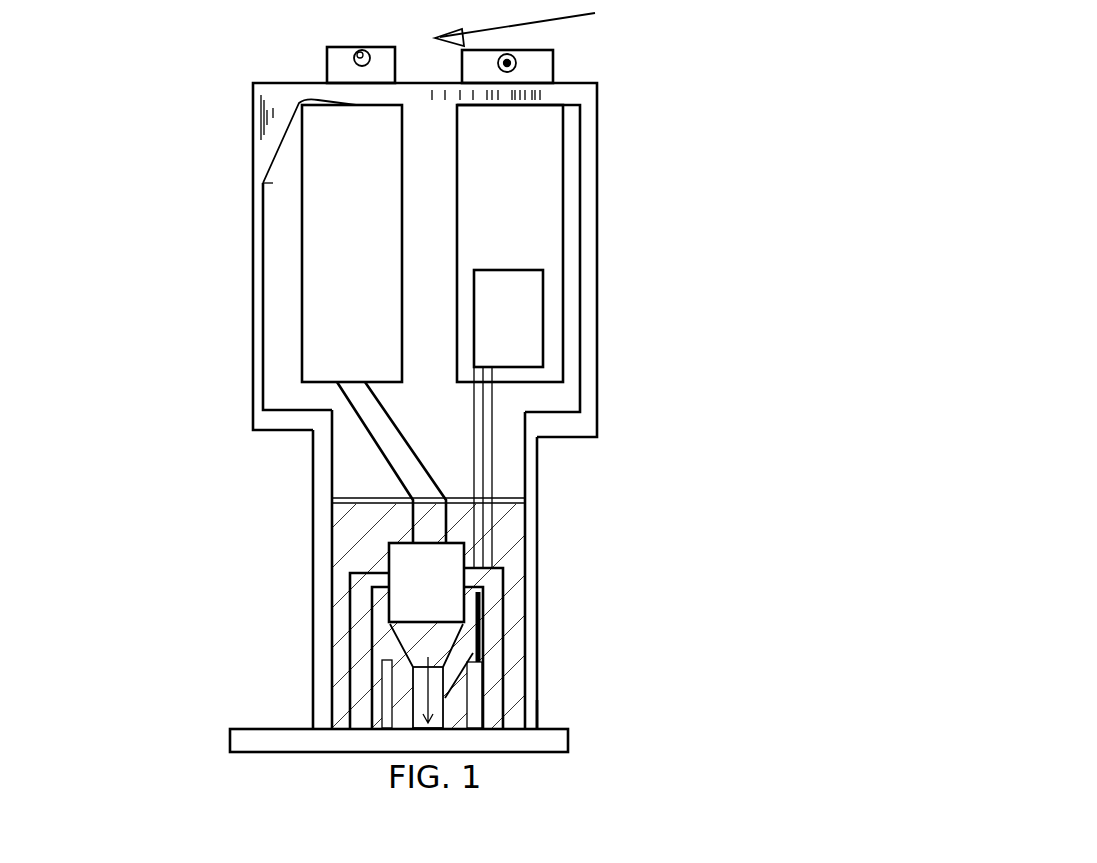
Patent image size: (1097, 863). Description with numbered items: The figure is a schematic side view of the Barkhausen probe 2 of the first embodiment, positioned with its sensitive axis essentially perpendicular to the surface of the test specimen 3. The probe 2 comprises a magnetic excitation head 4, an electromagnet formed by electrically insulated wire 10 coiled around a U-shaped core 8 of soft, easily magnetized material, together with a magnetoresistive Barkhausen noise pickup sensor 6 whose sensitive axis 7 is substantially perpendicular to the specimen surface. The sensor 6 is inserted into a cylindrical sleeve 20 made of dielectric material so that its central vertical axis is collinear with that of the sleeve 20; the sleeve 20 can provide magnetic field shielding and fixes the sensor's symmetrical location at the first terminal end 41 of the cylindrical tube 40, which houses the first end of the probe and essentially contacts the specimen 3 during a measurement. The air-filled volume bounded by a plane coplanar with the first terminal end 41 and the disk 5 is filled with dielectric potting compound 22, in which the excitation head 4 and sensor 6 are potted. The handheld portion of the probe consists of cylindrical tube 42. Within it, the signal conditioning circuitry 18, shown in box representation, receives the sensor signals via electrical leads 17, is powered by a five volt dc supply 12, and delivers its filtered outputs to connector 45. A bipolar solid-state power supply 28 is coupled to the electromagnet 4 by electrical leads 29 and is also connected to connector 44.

The Barkhausen probe 2 is at (532, 23).
The test specimen 3 is at (300, 728).
The magnetic excitation head 4 is at (395, 533).
The disk 5 is at (397, 498).
The Barkhausen noise pickup sensor 6 is at (415, 670).
The sensitive axis 7 is at (418, 698).
The U-shaped core 8 is at (505, 597).
The electrically insulated wire 10 is at (392, 557).
The 5 Vdc supply 12 is at (530, 338).
The electrical leads 17 is at (470, 412).
The signal conditioning circuitry 18 is at (520, 192).
The cylindrical sleeve 20 is at (473, 697).
The potting compound 22 is at (415, 642).
The bipolar solid-state power supply 28 is at (350, 237).
The electrical leads 29 is at (377, 445).
The cylindrical tube 40 is at (540, 502).
The first terminal end 41 is at (537, 728).
The cylindrical tube 42 is at (598, 240).
The connector 44 is at (343, 63).
The connector 45 is at (555, 58).